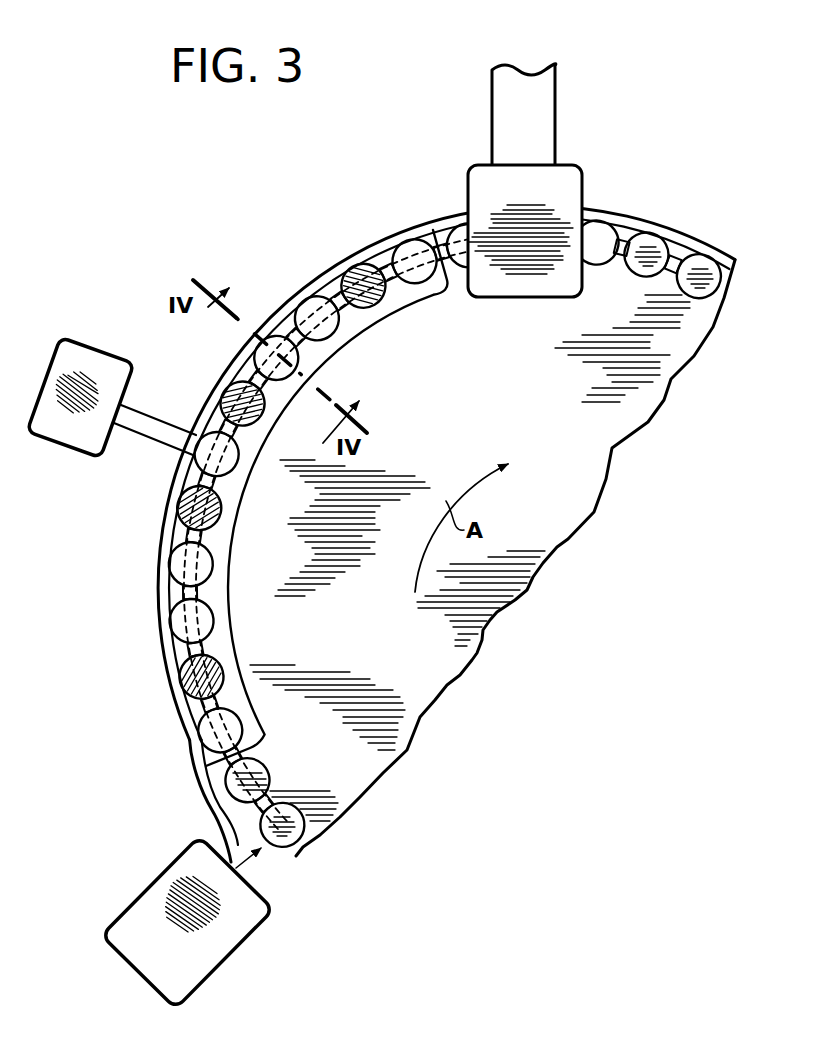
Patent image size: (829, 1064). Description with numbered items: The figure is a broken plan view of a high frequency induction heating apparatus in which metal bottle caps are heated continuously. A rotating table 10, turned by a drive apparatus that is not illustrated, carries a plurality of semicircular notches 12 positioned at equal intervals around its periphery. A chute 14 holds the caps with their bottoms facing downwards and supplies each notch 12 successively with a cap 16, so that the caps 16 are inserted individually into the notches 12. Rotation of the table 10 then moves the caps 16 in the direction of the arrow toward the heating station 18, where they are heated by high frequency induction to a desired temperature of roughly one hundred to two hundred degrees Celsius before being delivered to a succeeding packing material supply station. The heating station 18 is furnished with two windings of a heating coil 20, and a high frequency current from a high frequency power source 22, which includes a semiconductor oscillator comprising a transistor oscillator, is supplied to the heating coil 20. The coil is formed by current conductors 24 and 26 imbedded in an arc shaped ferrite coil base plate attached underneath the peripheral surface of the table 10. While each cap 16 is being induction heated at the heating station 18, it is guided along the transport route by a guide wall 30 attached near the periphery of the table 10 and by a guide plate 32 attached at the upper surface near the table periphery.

The rotating table 10 is at (563, 517).
The semicircular notches 12 is at (417, 285).
The chute 14 is at (162, 898).
The cap 16 is at (305, 298).
The heating station 18 is at (317, 254).
The heating coil 20 is at (220, 432).
The high frequency power source 22 is at (92, 370).
The current conductor 24 is at (167, 413).
The current conductor 26 is at (145, 438).
The guide wall 30 is at (352, 252).
The guide plate 32 is at (218, 485).